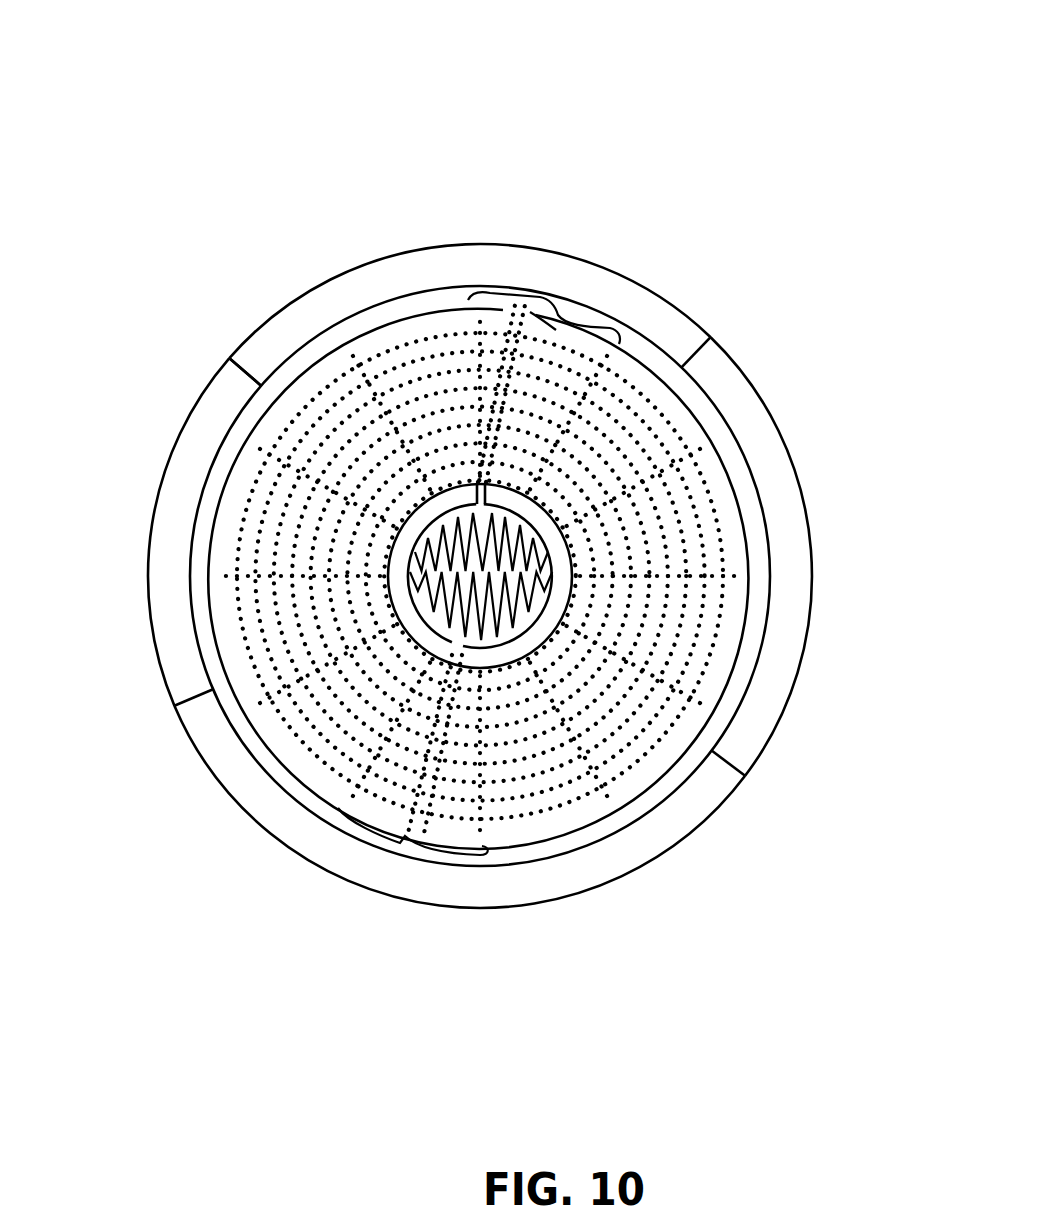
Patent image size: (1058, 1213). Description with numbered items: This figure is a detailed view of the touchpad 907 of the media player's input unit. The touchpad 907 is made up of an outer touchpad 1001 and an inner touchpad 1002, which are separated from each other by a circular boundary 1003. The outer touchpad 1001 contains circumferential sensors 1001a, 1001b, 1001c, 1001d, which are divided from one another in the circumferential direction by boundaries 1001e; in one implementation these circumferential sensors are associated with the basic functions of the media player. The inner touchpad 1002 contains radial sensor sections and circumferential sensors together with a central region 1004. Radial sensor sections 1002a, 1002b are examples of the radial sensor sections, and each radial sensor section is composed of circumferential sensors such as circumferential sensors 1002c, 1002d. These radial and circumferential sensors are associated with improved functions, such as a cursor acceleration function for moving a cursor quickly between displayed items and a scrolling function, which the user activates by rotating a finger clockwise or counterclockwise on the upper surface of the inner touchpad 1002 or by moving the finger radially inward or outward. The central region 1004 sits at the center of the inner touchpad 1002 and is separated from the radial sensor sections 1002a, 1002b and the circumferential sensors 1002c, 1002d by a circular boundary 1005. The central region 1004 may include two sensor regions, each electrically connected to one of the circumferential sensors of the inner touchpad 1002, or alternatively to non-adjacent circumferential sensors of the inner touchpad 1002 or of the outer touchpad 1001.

The touchpad 907 is at (628, 108).
The outer touchpad 1001 is at (495, 244).
The circumferential sensor 1001a is at (356, 284).
The circumferential sensor 1001b is at (787, 537).
The circumferential sensor 1001c is at (494, 887).
The circumferential sensor 1001d is at (168, 522).
The boundaries 1001e is at (245, 368).
The inner touchpad 1002 is at (707, 438).
The radial sensor section 1002a is at (548, 306).
The radial sensor section 1002b is at (405, 843).
The circumferential sensor 1002c is at (298, 722).
The circumferential sensor 1002d is at (340, 738).
The circular boundary 1003 is at (642, 340).
The central region 1004 is at (555, 580).
The circular boundary 1005 is at (553, 608).